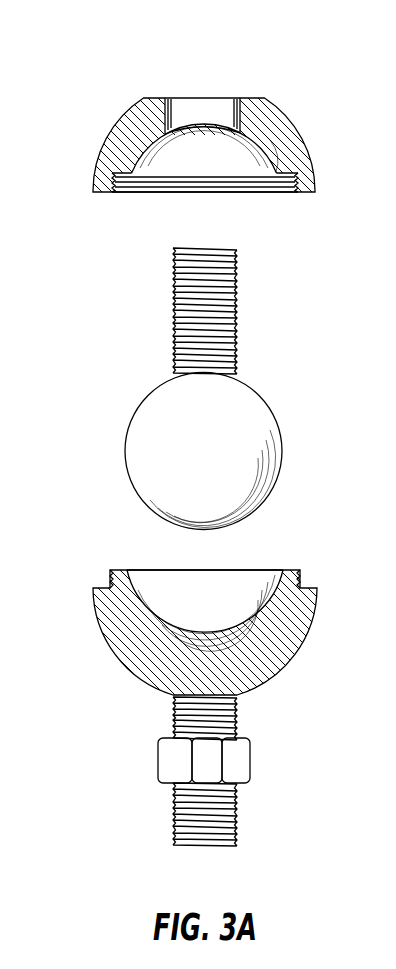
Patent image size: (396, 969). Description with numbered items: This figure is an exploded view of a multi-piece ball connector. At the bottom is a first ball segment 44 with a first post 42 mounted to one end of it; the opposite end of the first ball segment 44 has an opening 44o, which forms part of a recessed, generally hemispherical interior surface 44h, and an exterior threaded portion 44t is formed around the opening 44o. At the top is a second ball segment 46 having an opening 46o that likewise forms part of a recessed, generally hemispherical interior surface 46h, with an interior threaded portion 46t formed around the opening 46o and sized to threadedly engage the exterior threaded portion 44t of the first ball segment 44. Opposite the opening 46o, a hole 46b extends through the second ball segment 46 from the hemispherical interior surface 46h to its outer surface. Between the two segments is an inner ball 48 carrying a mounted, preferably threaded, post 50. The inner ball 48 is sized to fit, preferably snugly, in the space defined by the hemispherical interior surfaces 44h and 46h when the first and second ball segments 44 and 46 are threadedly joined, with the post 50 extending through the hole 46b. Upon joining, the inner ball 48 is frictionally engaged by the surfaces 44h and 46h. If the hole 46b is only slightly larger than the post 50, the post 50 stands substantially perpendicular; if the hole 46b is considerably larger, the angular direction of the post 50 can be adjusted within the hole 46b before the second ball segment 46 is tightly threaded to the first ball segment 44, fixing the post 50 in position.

The first post 42 is at (235, 813).
The first ball segment 44 is at (203, 615).
The generally hemispherical interior surface 44h is at (238, 658).
The opening 44o is at (258, 570).
The exterior threaded portion 44t is at (112, 580).
The second ball segment 46 is at (196, 147).
The hole 46b is at (179, 98).
The generally hemispherical interior surface 46h is at (276, 170).
The opening 46o is at (184, 197).
The interior threaded portion 46t is at (115, 190).
The inner ball 48 is at (140, 428).
The post 50 is at (173, 312).